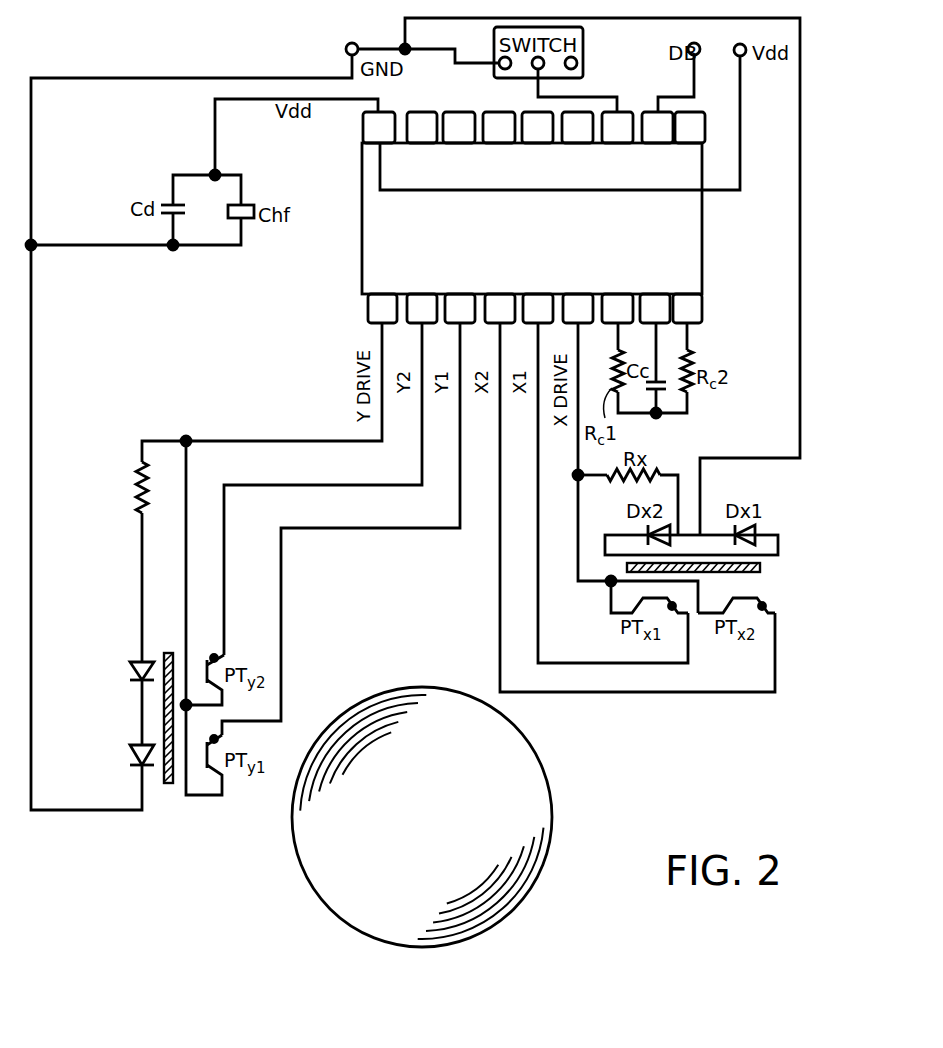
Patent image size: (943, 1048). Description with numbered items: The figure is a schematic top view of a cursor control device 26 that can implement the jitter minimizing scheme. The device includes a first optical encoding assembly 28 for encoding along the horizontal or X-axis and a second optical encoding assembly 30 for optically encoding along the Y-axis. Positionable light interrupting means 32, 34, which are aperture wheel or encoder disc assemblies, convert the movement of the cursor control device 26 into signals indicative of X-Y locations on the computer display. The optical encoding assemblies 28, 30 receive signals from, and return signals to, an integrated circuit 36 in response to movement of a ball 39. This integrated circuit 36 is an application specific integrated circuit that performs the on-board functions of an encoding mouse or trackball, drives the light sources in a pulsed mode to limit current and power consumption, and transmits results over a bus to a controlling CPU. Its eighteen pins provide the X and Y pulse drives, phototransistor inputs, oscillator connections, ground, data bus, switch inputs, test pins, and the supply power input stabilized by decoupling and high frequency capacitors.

The cursor control device 26 is at (832, 118).
The first optical encoding assembly 28 is at (796, 550).
The second optical encoding assembly 30 is at (25, 792).
The positionable light interrupting means 32 is at (760, 567).
The positionable light interrupting means 34 is at (170, 783).
The integrated circuit 36 is at (352, 254).
The ball 39 is at (525, 782).